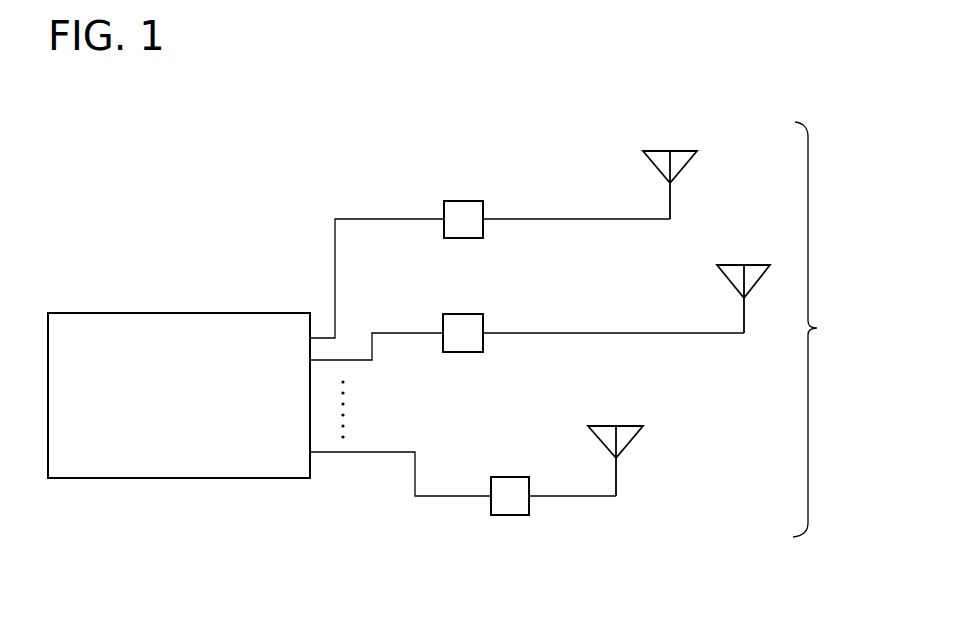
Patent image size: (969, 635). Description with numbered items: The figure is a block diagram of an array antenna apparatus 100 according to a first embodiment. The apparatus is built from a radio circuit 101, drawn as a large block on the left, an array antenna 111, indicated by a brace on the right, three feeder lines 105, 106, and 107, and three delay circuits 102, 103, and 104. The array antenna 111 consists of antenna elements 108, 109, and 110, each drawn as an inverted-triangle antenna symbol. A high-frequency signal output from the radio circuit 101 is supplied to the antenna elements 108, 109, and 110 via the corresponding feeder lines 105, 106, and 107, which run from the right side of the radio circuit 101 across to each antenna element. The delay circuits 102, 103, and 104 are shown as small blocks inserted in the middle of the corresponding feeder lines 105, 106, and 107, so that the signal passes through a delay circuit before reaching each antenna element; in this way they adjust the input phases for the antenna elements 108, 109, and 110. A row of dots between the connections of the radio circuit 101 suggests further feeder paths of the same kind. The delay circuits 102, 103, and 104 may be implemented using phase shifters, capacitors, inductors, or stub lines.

The array antenna apparatus 100 is at (456, 588).
The radio circuit 101 is at (213, 313).
The delay circuit 102 is at (465, 201).
The delay circuit 103 is at (462, 314).
The delay circuit 104 is at (508, 477).
The feeder line 105 is at (566, 220).
The feeder line 106 is at (566, 334).
The feeder line 107 is at (564, 497).
The antenna element 108 is at (680, 151).
The antenna element 109 is at (752, 265).
The antenna element 110 is at (623, 426).
The array antenna 111 is at (829, 329).